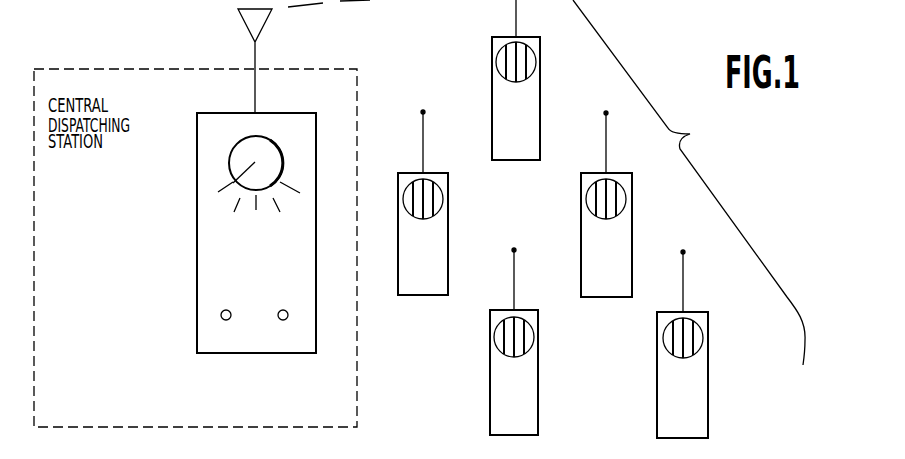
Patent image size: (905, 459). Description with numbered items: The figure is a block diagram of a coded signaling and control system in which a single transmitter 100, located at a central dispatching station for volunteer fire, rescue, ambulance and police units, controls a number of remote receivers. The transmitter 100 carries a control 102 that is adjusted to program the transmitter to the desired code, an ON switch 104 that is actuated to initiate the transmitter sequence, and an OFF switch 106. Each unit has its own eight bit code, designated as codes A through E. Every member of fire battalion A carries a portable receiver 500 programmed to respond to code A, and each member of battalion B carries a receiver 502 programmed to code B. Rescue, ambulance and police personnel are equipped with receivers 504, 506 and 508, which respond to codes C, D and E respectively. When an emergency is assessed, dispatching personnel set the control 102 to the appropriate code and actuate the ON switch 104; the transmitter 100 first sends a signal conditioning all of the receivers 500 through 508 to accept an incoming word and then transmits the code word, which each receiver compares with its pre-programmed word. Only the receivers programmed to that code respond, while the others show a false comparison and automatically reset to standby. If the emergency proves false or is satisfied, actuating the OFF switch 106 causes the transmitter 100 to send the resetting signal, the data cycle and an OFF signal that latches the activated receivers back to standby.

The transmitter 100 is at (194, 235).
The control 102 is at (234, 147).
The ON switch 104 is at (221, 316).
The OFF switch 106 is at (283, 321).
The receiver 500 is at (492, 95).
The receiver 502 is at (398, 252).
The receiver 504 is at (581, 228).
The receiver 506 is at (490, 365).
The receiver 508 is at (657, 394).